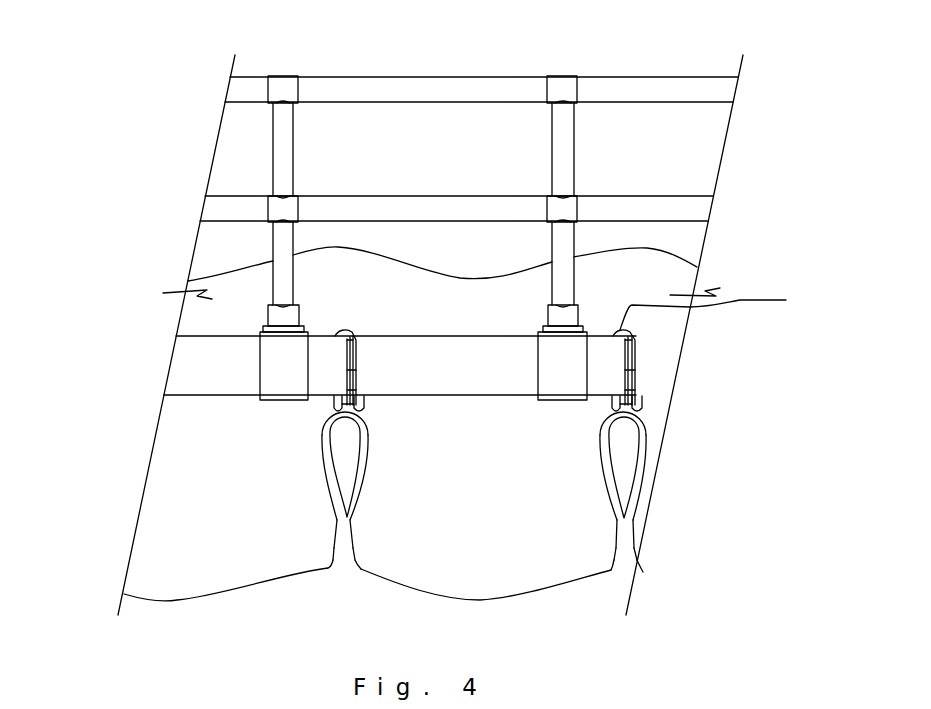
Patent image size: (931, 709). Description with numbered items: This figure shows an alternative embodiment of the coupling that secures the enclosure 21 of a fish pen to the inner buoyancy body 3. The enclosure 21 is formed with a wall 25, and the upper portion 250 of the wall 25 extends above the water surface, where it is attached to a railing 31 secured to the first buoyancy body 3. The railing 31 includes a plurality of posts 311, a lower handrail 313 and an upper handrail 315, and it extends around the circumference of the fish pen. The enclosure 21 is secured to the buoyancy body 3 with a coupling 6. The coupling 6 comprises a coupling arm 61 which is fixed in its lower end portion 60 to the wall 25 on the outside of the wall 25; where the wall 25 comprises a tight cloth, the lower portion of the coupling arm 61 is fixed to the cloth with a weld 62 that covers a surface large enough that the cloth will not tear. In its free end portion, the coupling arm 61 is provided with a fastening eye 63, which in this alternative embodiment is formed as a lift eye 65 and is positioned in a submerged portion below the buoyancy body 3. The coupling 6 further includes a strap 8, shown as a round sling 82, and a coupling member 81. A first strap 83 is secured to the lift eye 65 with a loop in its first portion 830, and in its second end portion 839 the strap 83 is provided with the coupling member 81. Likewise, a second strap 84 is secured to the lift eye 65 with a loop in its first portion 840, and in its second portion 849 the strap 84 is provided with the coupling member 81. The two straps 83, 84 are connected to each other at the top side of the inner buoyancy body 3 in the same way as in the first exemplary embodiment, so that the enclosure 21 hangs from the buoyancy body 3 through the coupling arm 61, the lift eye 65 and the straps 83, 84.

The first buoyancy body 3 is at (592, 339).
The upper handrail 315 is at (305, 79).
The lower handrail 313 is at (244, 200).
The posts 311 is at (277, 150).
The railing 31 is at (284, 195).
The upper portion 250 is at (239, 300).
The strap 8 is at (322, 325).
The second end portion 839 is at (632, 328).
The second portion 849 is at (726, 304).
The coupling member 81 is at (612, 326).
The first strap 83 is at (345, 339).
The round sling 82 is at (342, 367).
The second strap 84 is at (339, 394).
The first portion 830 is at (632, 402).
The first portion 840 is at (625, 410).
The lift eye 65 is at (320, 427).
The fastening eye 63 is at (325, 460).
The coupling arm 61 is at (335, 519).
The lower end portion 60 is at (339, 532).
The weld 62 is at (337, 547).
The coupling 6 is at (656, 482).
The enclosure 21 is at (454, 470).
The wall 25 is at (454, 522).